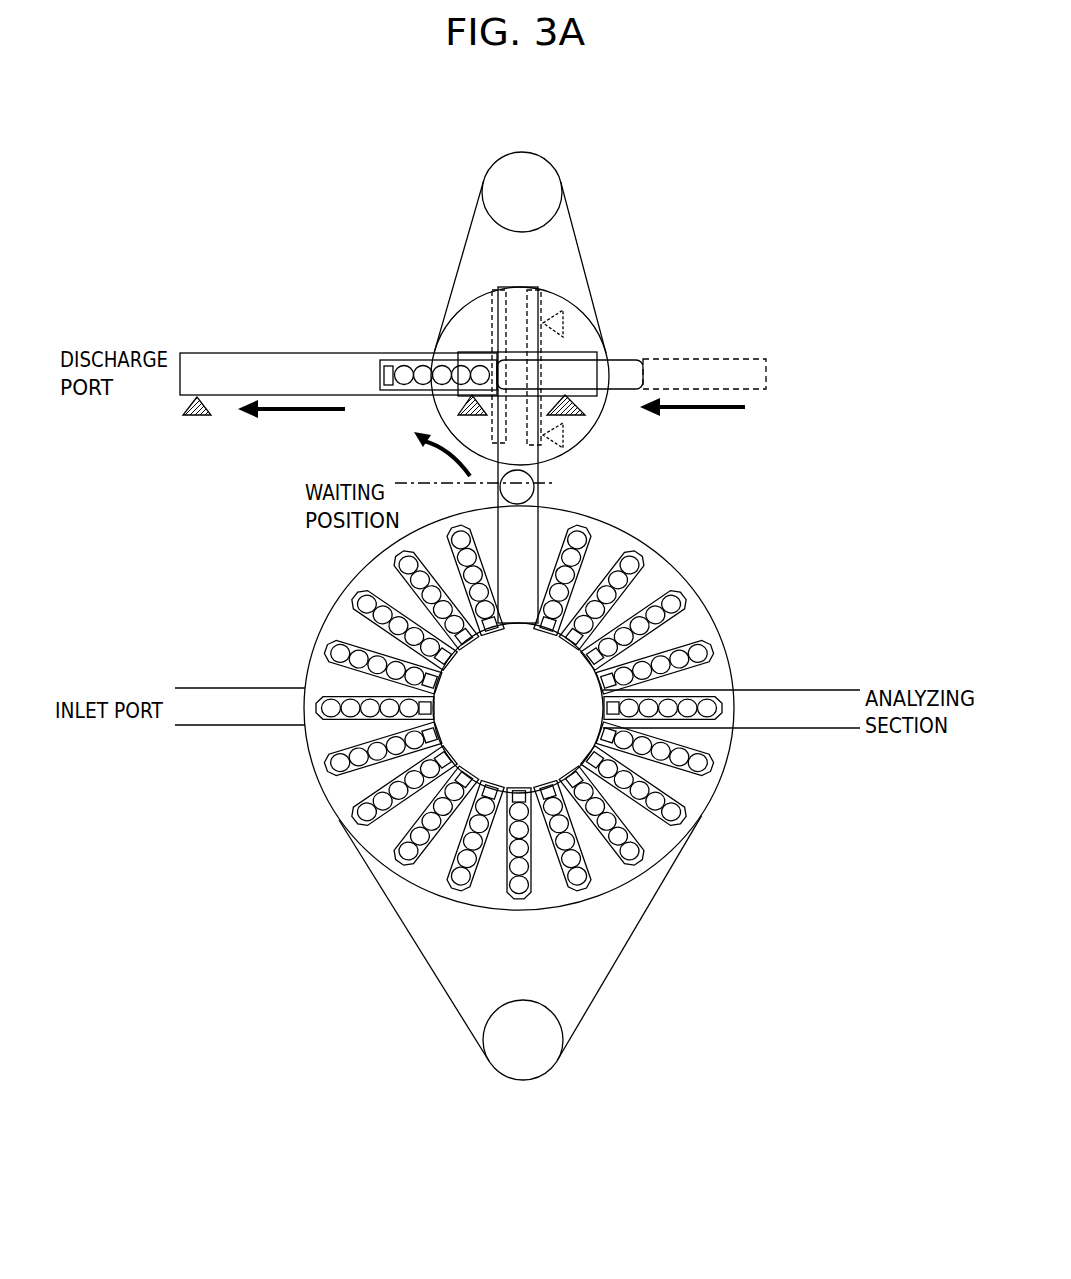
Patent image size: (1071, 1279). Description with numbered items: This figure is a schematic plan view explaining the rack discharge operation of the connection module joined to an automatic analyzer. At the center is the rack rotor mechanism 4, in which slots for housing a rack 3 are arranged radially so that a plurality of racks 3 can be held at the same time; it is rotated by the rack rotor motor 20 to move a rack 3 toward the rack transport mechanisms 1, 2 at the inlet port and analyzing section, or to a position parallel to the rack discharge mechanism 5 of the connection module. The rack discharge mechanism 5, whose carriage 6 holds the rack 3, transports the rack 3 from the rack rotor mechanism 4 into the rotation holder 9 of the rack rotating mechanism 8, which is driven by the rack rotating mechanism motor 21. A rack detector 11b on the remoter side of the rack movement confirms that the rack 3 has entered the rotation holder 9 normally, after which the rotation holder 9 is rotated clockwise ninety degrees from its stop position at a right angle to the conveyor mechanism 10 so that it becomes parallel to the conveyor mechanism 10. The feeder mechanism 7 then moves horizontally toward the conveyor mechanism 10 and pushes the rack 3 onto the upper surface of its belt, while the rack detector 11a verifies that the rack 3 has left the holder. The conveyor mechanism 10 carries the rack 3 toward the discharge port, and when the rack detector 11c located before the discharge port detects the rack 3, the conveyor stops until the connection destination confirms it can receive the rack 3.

The rack transport mechanism 1 is at (292, 690).
The rack transport mechanism 2 is at (795, 690).
The rack 3 is at (432, 352).
The rack rotor mechanism 4 is at (678, 562).
The rack discharge mechanism 5 is at (496, 522).
The carriage 6 is at (540, 488).
The feeder mechanism 7 is at (703, 357).
The rack rotating mechanism 8 is at (575, 306).
The rotation holder 9 is at (455, 318).
The conveyor mechanism 10 is at (292, 353).
The rack detector 11a is at (460, 413).
The rack detector 11b is at (592, 420).
The rack detector 11c is at (195, 418).
The rack rotor motor 20 is at (553, 1048).
The rack rotating mechanism motor 21 is at (550, 173).